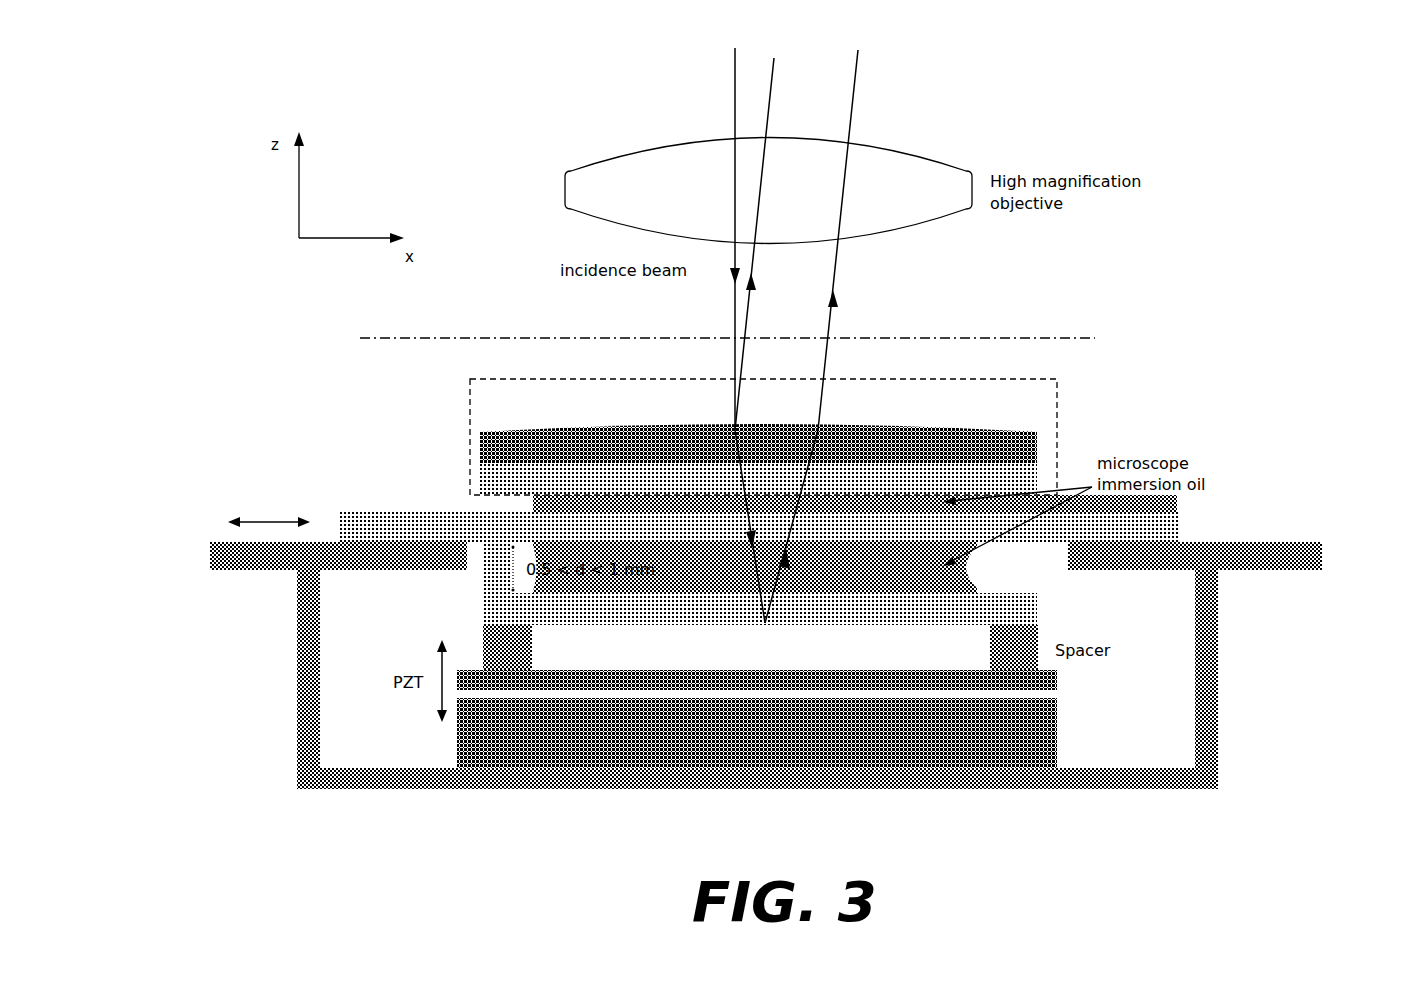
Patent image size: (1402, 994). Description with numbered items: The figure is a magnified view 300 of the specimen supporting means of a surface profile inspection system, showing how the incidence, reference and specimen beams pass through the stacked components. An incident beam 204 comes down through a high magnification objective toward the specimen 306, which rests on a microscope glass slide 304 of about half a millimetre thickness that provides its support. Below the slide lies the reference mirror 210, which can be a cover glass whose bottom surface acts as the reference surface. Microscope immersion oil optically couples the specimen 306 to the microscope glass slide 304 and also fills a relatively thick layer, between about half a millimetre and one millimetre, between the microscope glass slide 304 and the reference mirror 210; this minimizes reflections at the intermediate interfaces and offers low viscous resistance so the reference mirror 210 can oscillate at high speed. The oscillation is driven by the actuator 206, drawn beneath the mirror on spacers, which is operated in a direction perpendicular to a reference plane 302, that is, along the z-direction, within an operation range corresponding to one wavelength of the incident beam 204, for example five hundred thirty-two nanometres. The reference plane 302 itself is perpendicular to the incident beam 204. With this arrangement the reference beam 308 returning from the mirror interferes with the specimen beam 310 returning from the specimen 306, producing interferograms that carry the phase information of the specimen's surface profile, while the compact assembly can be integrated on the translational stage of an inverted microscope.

The magnified view 300 is at (240, 780).
The reference plane 302 is at (360, 338).
The microscope glass slide 304 is at (455, 510).
The specimen 306 is at (783, 437).
The reference beam 308 is at (855, 73).
The specimen beam 310 is at (776, 71).
The incident beam 204 is at (733, 80).
The reference mirror 210 is at (1033, 609).
The actuator 206 is at (1053, 680).